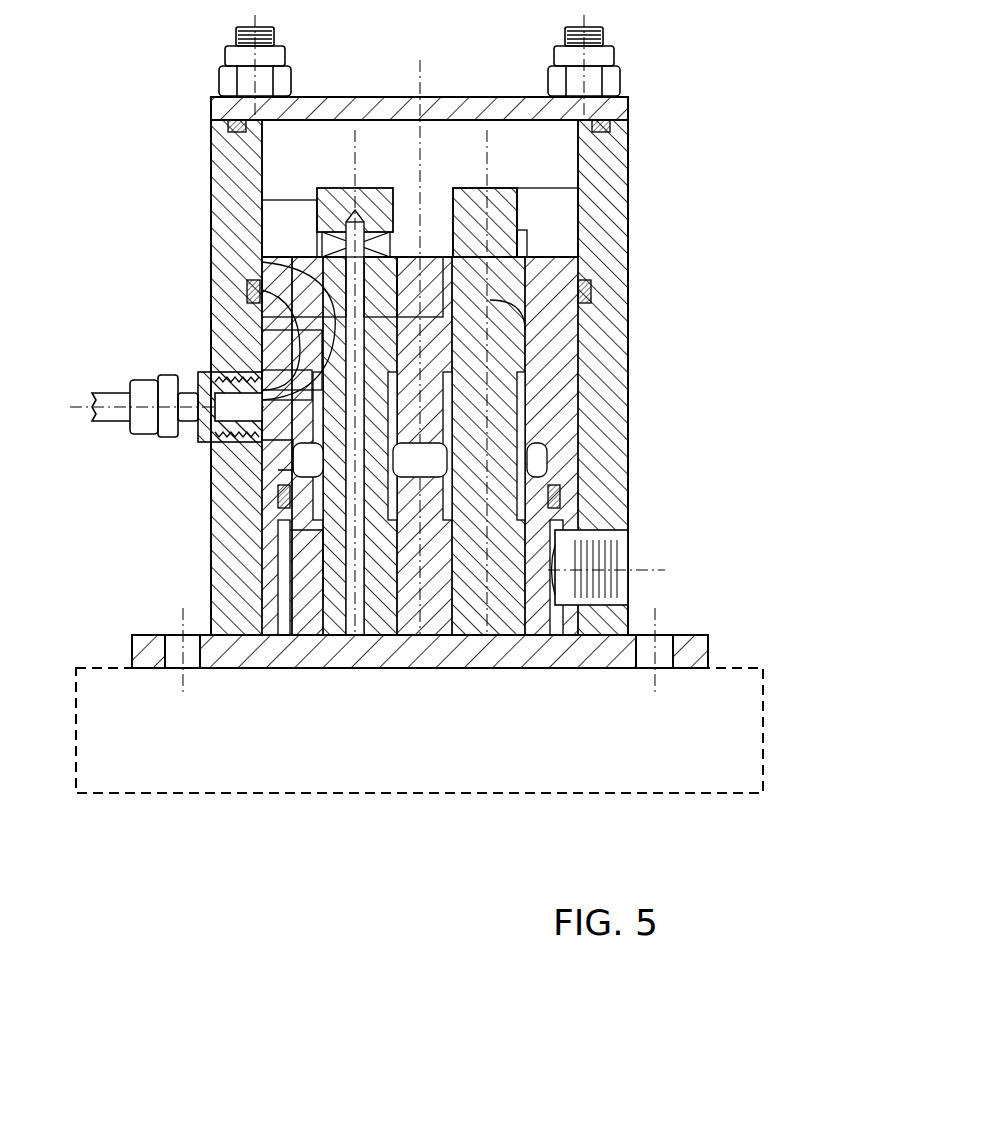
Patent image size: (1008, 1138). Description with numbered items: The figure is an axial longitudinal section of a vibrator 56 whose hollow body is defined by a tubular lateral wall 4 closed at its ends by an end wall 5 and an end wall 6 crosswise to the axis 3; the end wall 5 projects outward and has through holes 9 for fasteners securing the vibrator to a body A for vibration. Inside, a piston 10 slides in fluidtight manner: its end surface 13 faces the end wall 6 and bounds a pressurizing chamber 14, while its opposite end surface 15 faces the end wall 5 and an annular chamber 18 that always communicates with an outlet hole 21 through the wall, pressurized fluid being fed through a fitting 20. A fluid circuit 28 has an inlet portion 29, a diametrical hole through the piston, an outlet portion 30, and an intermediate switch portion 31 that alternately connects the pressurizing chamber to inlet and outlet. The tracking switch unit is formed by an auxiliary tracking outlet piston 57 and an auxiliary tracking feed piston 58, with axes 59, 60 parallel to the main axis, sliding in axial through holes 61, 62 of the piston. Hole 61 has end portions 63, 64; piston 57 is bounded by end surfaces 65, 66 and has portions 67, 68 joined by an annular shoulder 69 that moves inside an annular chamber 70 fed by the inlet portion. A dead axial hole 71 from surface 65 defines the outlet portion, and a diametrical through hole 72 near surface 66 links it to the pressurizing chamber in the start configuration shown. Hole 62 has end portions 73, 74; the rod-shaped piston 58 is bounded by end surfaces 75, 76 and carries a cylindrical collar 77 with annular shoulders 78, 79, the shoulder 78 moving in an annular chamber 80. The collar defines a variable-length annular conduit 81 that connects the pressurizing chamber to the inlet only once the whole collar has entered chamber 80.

The axis 3 is at (425, 115).
The tubular lateral wall 4 is at (605, 150).
The end wall 5 is at (610, 657).
The end wall 6 is at (222, 103).
The through holes 9 is at (196, 652).
The piston 10 is at (607, 330).
The end surface 13 is at (283, 240).
The pressurizing chamber 14 is at (318, 135).
The end surface 15 is at (440, 645).
The annular chamber 18 is at (283, 598).
The fitting 20 is at (140, 400).
The outlet hole 21 is at (573, 550).
The fluid circuit 28 is at (335, 288).
The inlet portion 29 is at (538, 462).
The outlet portion 30 is at (413, 637).
The intermediate switch portion 31 is at (402, 243).
The vibrator 56 is at (695, 225).
The auxiliary tracking outlet piston 57 is at (293, 218).
The auxiliary tracking feed piston 58 is at (530, 190).
The axis 59 is at (360, 165).
The axis 60 is at (497, 125).
The axial through hole 61 is at (327, 330).
The axial through hole 62 is at (578, 318).
The end portion 63 is at (353, 637).
The end portion 64 is at (315, 383).
The end surface 65 is at (375, 650).
The end surface 66 is at (335, 190).
The portion 67 is at (333, 572).
The portion 68 is at (322, 218).
The annular shoulder 69 is at (300, 392).
The annular chamber 70 is at (300, 440).
The dead axial hole 71 is at (357, 528).
The diametrical through hole 72 is at (377, 250).
The end portion 73 is at (477, 637).
The end portion 74 is at (455, 278).
The end surface 75 is at (508, 645).
The end surface 76 is at (500, 180).
The cylindrical collar 77 is at (535, 350).
The annular shoulder 78 is at (523, 385).
The annular shoulder 79 is at (575, 290).
The annular chamber 80 is at (562, 432).
The variable-length annular conduit 81 is at (523, 247).
The body A is at (110, 730).